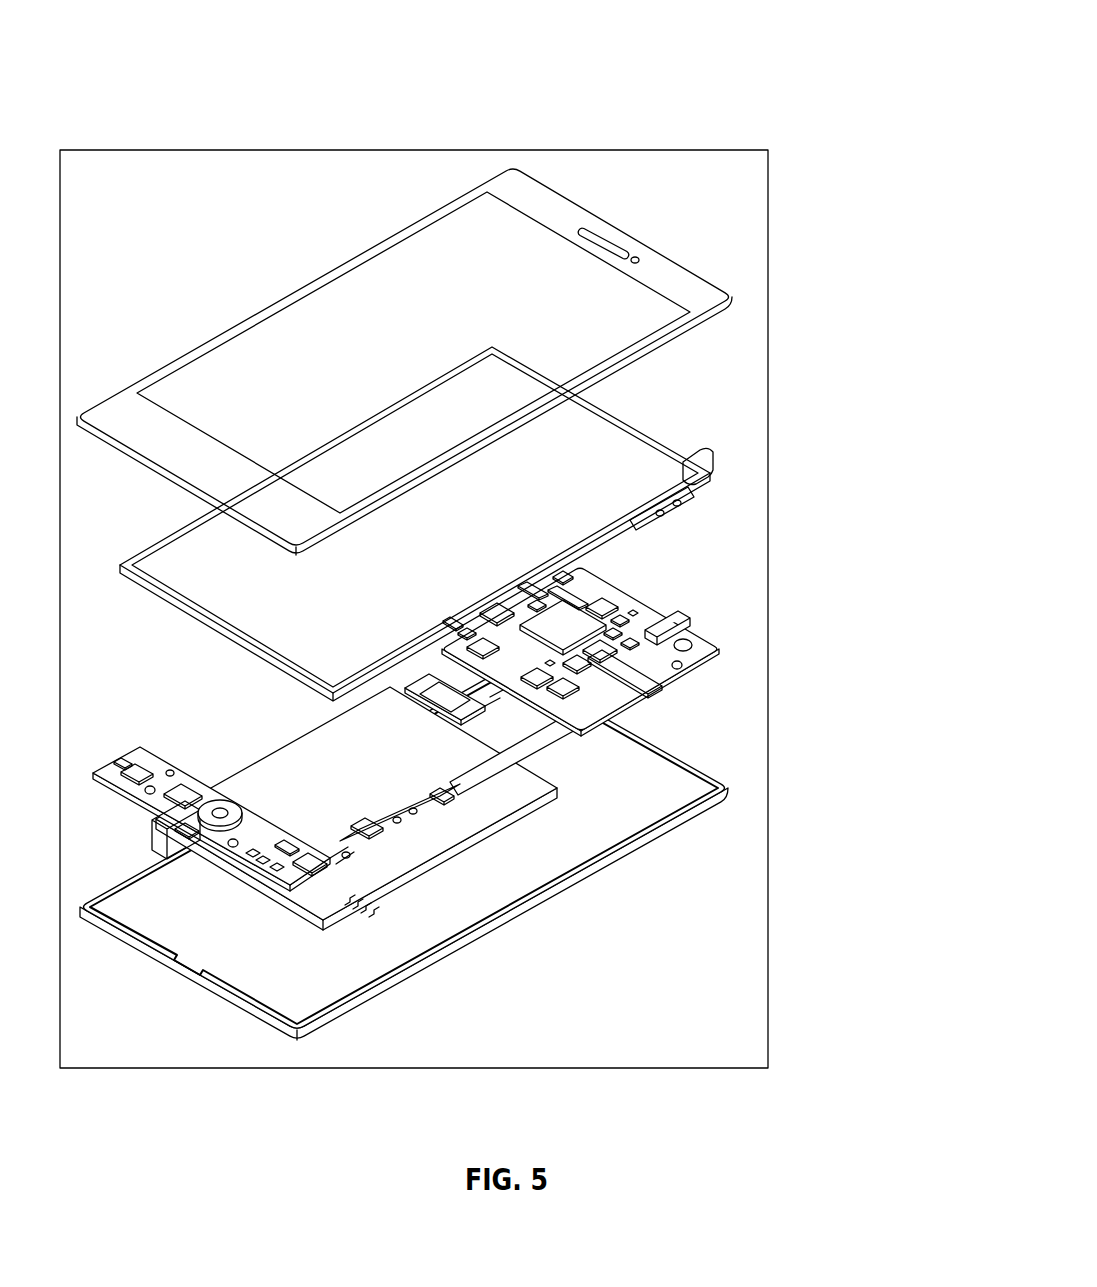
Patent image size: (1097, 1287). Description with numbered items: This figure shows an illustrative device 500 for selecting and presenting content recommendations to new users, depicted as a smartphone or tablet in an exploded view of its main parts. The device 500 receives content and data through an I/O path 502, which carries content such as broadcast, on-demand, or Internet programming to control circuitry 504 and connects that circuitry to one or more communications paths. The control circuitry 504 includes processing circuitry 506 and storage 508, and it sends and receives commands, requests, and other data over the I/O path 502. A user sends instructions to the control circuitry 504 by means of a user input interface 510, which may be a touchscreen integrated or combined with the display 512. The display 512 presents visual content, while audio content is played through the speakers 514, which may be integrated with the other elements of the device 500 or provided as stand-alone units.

The device 500 is at (482, 72).
The I/O path 502 is at (213, 833).
The control circuitry 504 is at (673, 722).
The processing circuitry 506 is at (577, 642).
The storage 508 is at (648, 650).
The user input interface 510 is at (647, 473).
The display 512 is at (690, 478).
The speakers 514 is at (610, 240).